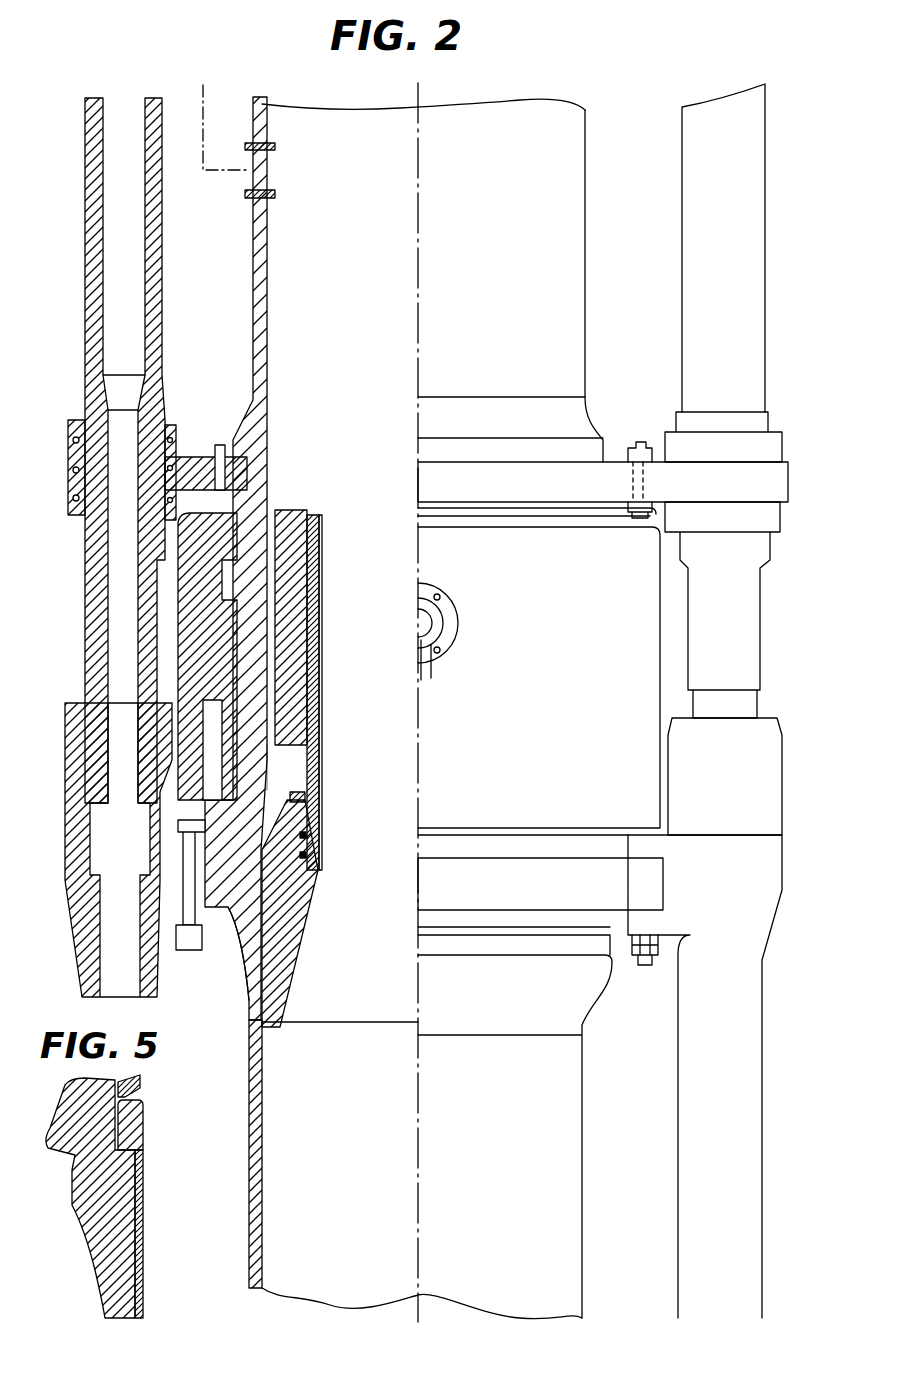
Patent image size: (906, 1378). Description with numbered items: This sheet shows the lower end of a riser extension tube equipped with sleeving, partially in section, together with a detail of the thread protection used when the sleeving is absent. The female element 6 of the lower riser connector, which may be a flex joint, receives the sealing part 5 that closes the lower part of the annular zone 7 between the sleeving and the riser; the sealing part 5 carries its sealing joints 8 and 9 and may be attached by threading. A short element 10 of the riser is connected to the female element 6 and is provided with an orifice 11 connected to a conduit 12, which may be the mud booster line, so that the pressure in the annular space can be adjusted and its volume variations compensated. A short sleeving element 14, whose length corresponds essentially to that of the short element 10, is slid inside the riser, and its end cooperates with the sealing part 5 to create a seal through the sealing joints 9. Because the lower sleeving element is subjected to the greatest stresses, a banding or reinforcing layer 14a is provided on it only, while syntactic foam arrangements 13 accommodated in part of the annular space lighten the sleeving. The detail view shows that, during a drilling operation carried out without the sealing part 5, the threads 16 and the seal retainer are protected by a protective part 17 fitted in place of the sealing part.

In FIG. 2, the sealing part 5 is at (283, 1010).
In FIG. 2, the female element 6 is at (232, 940).
In FIG. 2, the annular zone 7 is at (295, 768).
In FIG. 2, the sealing joint 8 is at (262, 873).
In FIG. 5, the sealing joint 8 is at (75, 1205).
In FIG. 2, the sealing joint 9 is at (300, 815).
In FIG. 2, the short element 10 is at (253, 254).
In FIG. 2, the orifice 11 is at (243, 187).
In FIG. 2, the conduit 12 is at (203, 125).
In FIG. 2, the syntactic foam arrangements 13 is at (288, 508).
In FIG. 2, the short sleeving element 14 is at (320, 545).
In FIG. 2, the banding or reinforcing layer 14a is at (320, 592).
In FIG. 5, the threads 16 is at (145, 1262).
In FIG. 5, the protective part 17 is at (145, 1142).